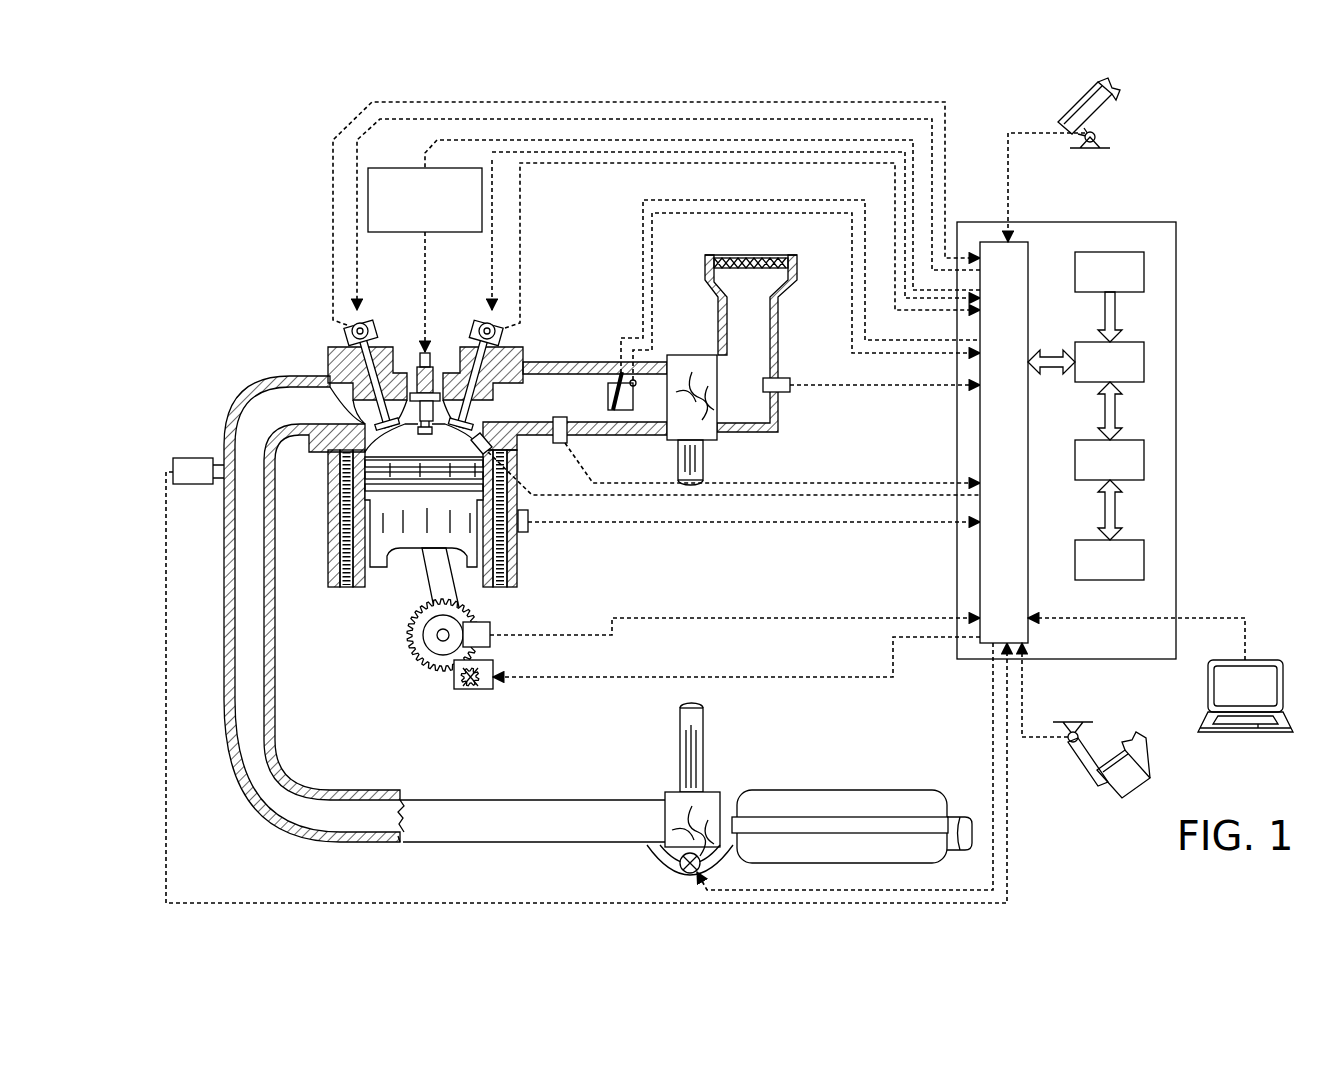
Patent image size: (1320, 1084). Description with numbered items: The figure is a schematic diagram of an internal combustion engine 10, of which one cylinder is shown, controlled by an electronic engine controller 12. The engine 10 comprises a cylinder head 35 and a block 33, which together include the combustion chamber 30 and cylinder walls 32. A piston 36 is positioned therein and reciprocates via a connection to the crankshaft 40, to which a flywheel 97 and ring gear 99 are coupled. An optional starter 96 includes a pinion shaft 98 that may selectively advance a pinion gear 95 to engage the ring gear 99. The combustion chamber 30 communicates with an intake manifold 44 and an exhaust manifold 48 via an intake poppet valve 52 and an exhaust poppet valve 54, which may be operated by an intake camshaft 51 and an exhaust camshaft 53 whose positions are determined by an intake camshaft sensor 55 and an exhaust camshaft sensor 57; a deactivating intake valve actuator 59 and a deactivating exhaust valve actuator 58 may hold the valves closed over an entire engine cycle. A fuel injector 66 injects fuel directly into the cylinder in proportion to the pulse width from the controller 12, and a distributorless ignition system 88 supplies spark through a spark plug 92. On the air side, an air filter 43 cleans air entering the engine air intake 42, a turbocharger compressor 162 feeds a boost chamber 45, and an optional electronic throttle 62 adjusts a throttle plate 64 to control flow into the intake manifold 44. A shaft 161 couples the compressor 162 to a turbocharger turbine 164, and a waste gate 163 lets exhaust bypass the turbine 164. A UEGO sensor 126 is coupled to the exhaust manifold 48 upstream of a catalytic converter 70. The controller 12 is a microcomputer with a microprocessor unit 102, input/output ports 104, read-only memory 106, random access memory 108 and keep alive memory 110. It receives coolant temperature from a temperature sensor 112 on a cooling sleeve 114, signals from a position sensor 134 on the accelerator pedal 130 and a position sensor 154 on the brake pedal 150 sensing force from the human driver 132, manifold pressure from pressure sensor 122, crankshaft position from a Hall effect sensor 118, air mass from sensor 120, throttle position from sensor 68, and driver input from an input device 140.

The internal combustion engine 10 is at (260, 300).
The electronic engine controller 12 is at (1112, 396).
The combustion chamber 30 is at (424, 440).
The cylinder walls 32 is at (370, 565).
The block 33 is at (421, 547).
The cylinder head 35 is at (396, 441).
The piston 36 is at (407, 540).
The crankshaft 40 is at (419, 654).
The engine air intake 42 is at (772, 265).
The air filter 43 is at (760, 266).
The intake manifold 44 is at (522, 408).
The boost chamber 45 is at (634, 411).
The exhaust manifold 48 is at (285, 416).
The intake camshaft 51 is at (712, 254).
The intake poppet valve 52 is at (460, 403).
The exhaust camshaft 53 is at (362, 318).
The exhaust poppet valve 54 is at (360, 400).
The intake camshaft sensor 55 is at (500, 325).
The exhaust camshaft sensor 57 is at (358, 312).
The deactivating exhaust valve actuator 58 is at (368, 324).
The deactivating intake valve actuator 59 is at (480, 330).
The electronic throttle 62 is at (608, 395).
The throttle plate 64 is at (612, 410).
The fuel injector 66 is at (472, 445).
The throttle position sensor 68 is at (636, 381).
The catalytic converter 70 is at (775, 790).
The distributorless ignition system 88 is at (388, 168).
The spark plug 92 is at (430, 345).
The pinion gear 95 is at (470, 690).
The starter 96 is at (698, 685).
The flywheel 97 is at (410, 645).
The pinion shaft 98 is at (463, 685).
The ring gear 99 is at (435, 675).
The microprocessor unit 102 is at (1144, 362).
The input/output ports 104 is at (1028, 242).
The read-only memory 106 is at (1144, 268).
The random access memory 108 is at (1144, 460).
The keep alive memory 110 is at (1144, 560).
The temperature sensor 112 is at (528, 515).
The cooling sleeve 114 is at (510, 536).
The Hall effect sensor 118 is at (490, 630).
The air mass sensor 120 is at (790, 385).
The pressure sensor 122 is at (558, 445).
The Universal Exhaust Gas Oxygen sensor 126 is at (173, 465).
The accelerator pedal 130 is at (1126, 435).
The human driver 132 is at (1120, 100).
The position sensor 134 is at (1100, 137).
The input device 140 is at (1215, 732).
The brake pedal 150 is at (1065, 726).
The position sensor 154 is at (1062, 730).
The shaft 161 is at (703, 460).
The turbocharger compressor 162 is at (712, 428).
The waste gate 163 is at (682, 870).
The turbocharger turbine 164 is at (670, 792).